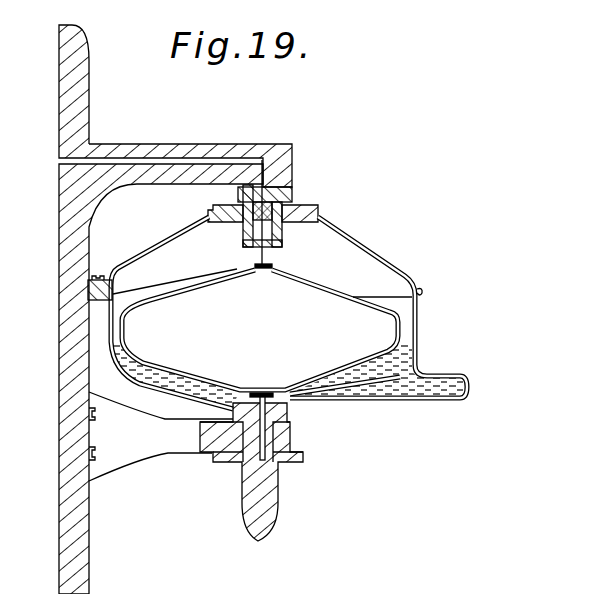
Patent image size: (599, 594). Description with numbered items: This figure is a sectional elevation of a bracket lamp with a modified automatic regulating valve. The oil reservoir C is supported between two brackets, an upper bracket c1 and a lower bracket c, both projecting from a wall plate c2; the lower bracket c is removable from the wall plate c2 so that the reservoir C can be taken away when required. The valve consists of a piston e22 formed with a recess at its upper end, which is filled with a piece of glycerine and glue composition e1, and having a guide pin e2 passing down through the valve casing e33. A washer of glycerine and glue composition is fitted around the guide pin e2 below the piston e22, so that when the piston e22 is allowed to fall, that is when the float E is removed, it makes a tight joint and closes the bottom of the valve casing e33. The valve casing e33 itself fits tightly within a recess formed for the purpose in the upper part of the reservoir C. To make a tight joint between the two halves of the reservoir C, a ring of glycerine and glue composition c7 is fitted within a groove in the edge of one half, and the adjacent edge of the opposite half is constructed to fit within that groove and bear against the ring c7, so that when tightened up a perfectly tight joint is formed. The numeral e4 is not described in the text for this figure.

The wall plate c2 is at (175, 309).
The upper bracket c1 is at (190, 156).
The glycerine and glue composition e1 is at (276, 196).
The piston e22 is at (283, 206).
The valve casing e33 is at (243, 229).
The bearing bottom e4 is at (243, 244).
The guide pin e2 is at (267, 259).
The oil reservoir C is at (277, 313).
The ring of glycerine and glue composition c7 is at (412, 289).
The float E is at (260, 333).
The lower bracket c is at (196, 466).